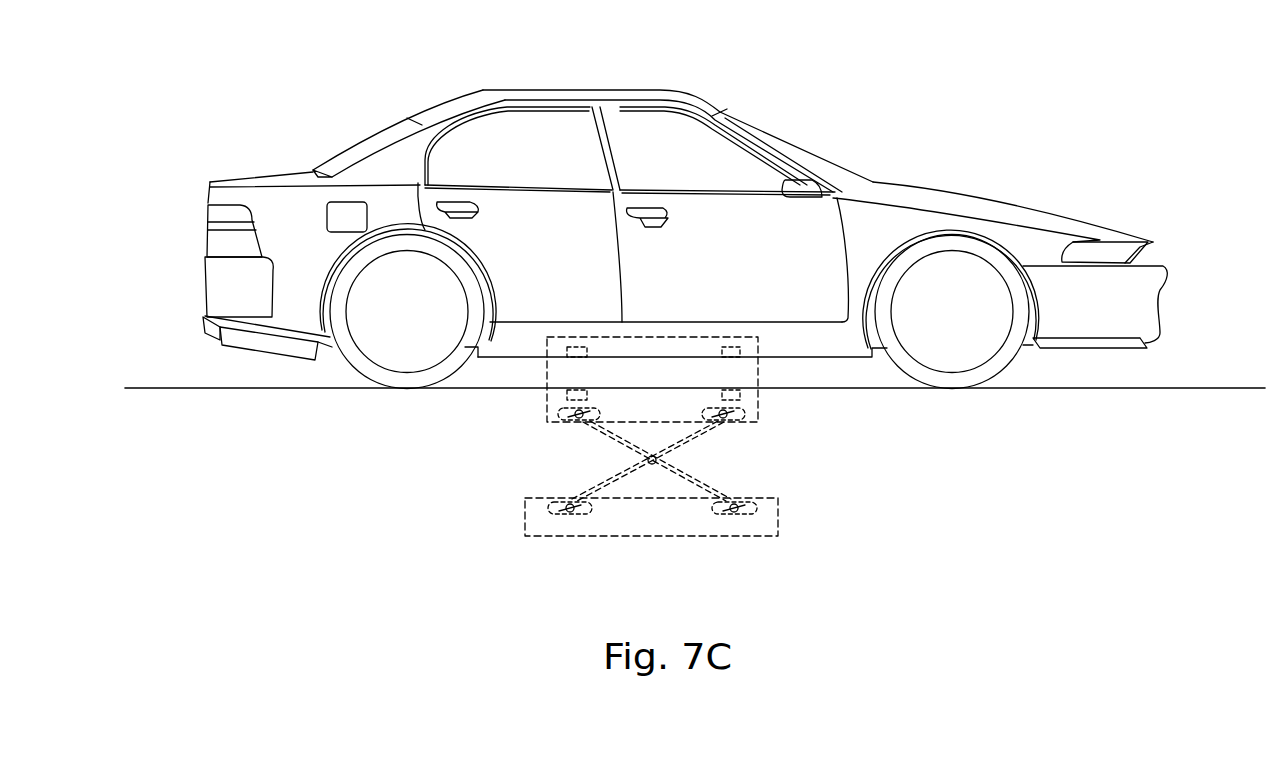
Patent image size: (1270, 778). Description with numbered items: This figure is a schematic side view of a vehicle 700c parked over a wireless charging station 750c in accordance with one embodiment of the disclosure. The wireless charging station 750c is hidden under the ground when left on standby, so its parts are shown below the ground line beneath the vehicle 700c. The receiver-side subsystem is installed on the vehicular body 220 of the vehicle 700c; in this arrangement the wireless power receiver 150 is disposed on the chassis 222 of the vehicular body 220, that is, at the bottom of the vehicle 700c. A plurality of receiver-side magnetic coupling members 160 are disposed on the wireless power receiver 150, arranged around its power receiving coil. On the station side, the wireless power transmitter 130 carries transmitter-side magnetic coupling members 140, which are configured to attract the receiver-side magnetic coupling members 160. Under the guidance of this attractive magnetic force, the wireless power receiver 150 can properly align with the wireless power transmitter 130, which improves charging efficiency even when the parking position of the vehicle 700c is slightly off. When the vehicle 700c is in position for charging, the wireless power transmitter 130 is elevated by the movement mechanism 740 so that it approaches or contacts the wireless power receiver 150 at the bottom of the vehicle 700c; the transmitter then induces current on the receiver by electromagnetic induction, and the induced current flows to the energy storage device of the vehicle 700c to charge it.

The vehicle 700c is at (788, 118).
The vehicular body 220 is at (910, 192).
The chassis 222 is at (833, 337).
The receiver-side magnetic coupling members 160 is at (573, 357).
The wireless power receiver 150 is at (748, 350).
The transmitter-side magnetic coupling members 140 is at (568, 395).
The wireless power transmitter 130 is at (555, 422).
The movement mechanism 740 is at (683, 440).
The wireless charging station 750c is at (482, 491).